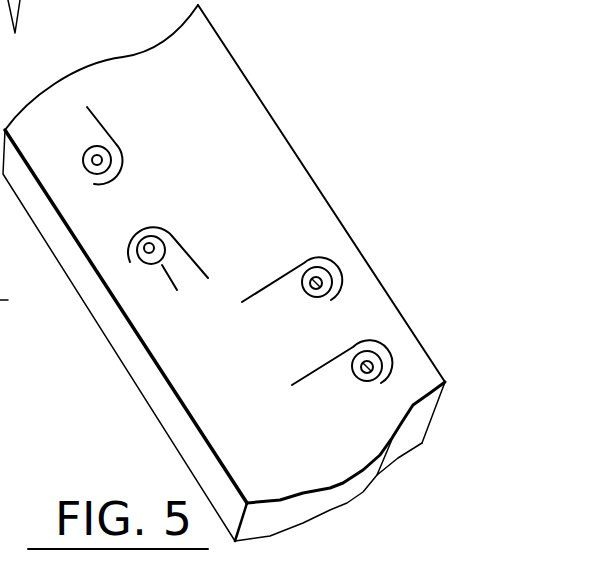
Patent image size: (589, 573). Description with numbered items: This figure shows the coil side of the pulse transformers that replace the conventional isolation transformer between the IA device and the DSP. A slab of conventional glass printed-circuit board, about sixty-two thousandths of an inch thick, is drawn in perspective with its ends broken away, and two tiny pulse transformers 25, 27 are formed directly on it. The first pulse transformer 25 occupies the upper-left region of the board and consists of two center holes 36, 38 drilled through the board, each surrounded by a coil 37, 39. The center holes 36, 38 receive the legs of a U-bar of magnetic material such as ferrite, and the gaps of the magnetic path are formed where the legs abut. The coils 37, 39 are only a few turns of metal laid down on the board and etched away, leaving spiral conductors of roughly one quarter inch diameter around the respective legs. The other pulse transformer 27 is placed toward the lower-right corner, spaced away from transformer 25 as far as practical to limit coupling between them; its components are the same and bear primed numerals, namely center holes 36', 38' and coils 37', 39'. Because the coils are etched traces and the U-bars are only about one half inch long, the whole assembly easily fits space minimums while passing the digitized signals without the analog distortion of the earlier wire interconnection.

The pulse transformer 25 is at (160, 198).
The pulse transformer 27 is at (385, 315).
The center hole 36 is at (66, 146).
The coil 37 is at (96, 166).
The center hole 38 is at (177, 227).
The coil 39 is at (168, 282).
The center hole 36' is at (303, 308).
The coil 37' is at (283, 308).
The center hole 38' is at (365, 395).
The coil 39' is at (342, 379).